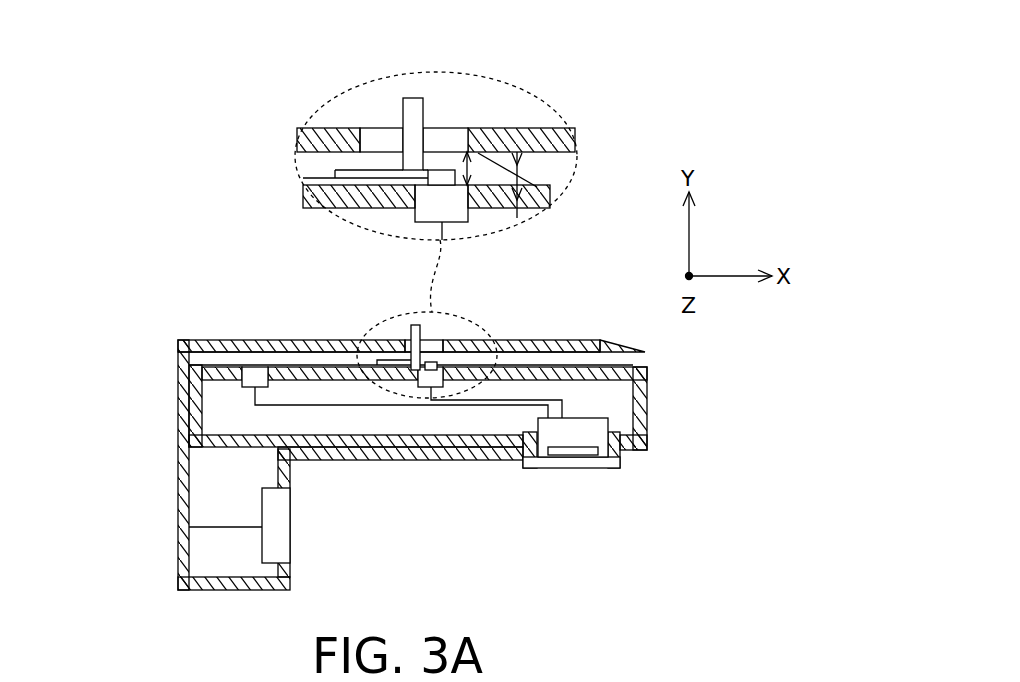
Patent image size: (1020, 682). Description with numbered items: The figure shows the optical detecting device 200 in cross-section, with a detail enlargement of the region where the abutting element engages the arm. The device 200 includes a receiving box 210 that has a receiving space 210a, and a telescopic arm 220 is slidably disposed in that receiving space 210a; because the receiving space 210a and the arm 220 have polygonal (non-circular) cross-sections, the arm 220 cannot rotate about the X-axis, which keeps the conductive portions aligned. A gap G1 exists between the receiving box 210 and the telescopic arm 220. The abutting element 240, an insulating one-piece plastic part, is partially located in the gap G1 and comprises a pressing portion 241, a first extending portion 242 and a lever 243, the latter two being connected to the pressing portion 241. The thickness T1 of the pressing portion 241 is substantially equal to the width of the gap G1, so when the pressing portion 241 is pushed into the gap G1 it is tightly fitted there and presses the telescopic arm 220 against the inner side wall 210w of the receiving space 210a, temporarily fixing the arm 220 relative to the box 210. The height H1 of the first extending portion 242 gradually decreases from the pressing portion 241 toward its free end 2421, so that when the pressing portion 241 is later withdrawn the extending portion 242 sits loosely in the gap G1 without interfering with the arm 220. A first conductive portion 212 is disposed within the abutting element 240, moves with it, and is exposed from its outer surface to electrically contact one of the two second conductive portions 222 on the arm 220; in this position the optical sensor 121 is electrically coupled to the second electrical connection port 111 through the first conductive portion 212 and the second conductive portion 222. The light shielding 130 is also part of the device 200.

The optical detecting device 200 is at (188, 242).
The receiving box 210 is at (178, 555).
The receiving space 210a is at (301, 348).
The inner side wall 210w is at (403, 445).
The telescopic arm 220 is at (187, 420).
The second conductive portion 222 is at (256, 374).
The first conductive portion 212 is at (447, 175).
The abutting element 240 is at (477, 104).
The pressing portion 241 is at (482, 155).
The first extending portion 242 is at (498, 173).
The free end 2421 is at (528, 176).
The lever 243 is at (415, 100).
The second electrical connection port 111 is at (281, 538).
The optical sensor 121 is at (577, 440).
The light shielding 130 is at (622, 455).
The gap G1 is at (576, 351).
The height of the first extending portion H1 is at (517, 200).
The thickness of the pressing portion T1 is at (468, 170).